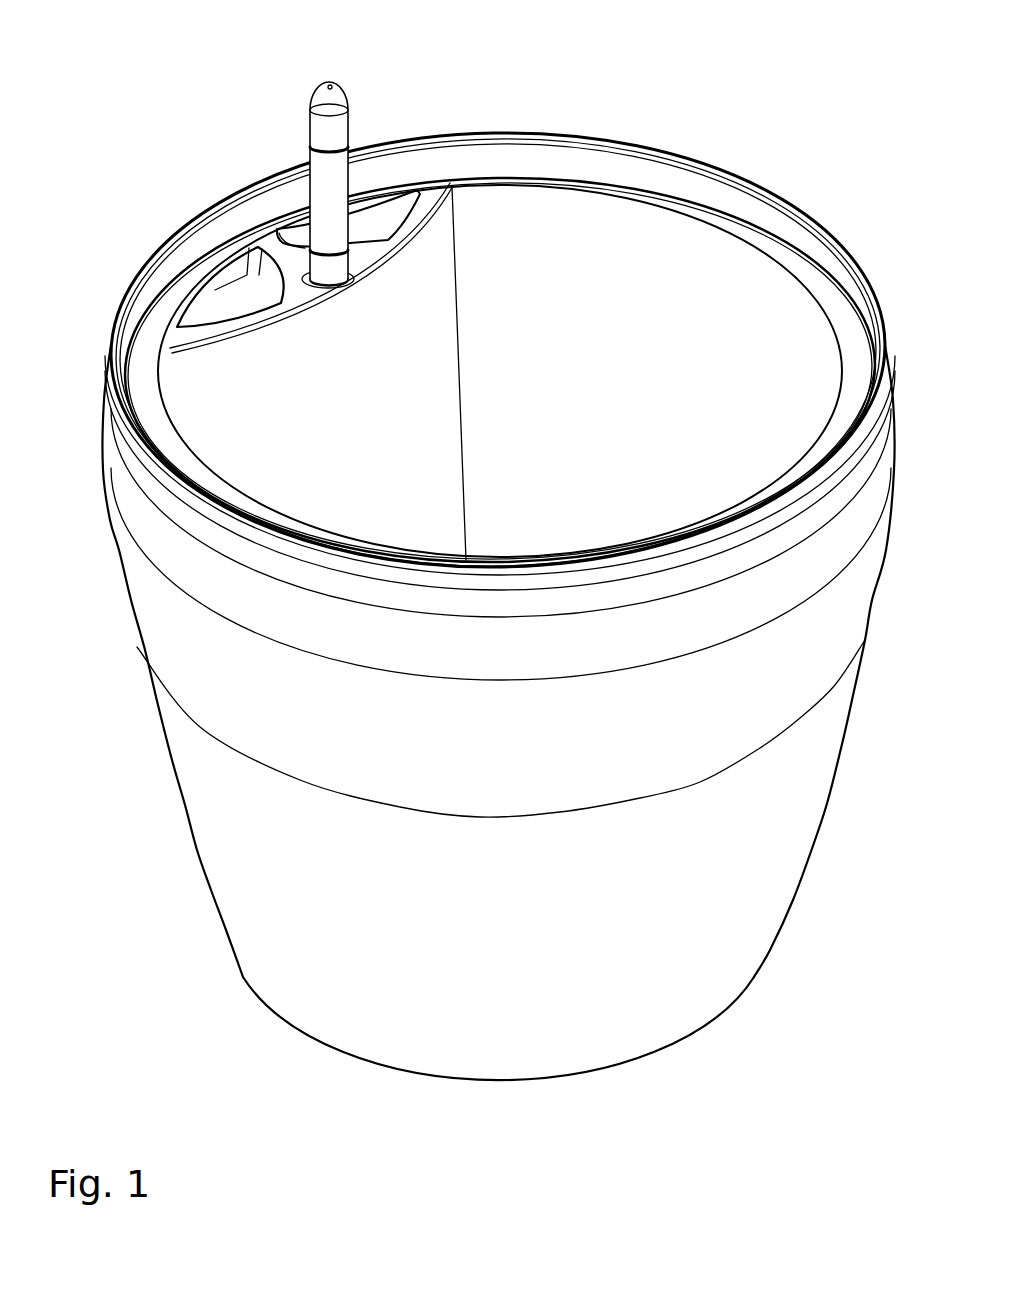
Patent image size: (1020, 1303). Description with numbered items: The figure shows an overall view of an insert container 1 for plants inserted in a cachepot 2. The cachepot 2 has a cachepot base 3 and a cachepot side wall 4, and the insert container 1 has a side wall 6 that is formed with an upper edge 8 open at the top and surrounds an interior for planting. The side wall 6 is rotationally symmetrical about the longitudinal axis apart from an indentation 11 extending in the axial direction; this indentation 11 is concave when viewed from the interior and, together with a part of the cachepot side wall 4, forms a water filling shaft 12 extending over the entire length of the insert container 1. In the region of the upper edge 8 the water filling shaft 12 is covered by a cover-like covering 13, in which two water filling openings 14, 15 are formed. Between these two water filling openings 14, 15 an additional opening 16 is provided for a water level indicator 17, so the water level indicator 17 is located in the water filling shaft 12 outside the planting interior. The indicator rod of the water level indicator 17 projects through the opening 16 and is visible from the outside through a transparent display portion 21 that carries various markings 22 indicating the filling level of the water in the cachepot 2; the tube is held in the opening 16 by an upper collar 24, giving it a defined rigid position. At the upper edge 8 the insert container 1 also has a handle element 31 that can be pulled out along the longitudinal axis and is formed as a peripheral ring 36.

The insert container 1 is at (527, 125).
The cachepot 2 is at (187, 782).
The cachepot base 3 is at (480, 1084).
The cachepot side wall 4 is at (561, 974).
The side wall 6 is at (618, 230).
The upper edge 8 is at (687, 188).
The indentation 11 is at (430, 247).
The water filling shaft 12 is at (277, 246).
The covering 13 is at (231, 255).
The water filling opening 14 is at (233, 293).
The water filling opening 15 is at (383, 205).
The opening 16 is at (263, 318).
The water level indicator 17 is at (355, 94).
The display portion 21 is at (320, 88).
The markings 22 is at (266, 243).
The upper collar 24 is at (313, 297).
The handle element 31 is at (645, 180).
The peripheral ring 36 is at (625, 165).